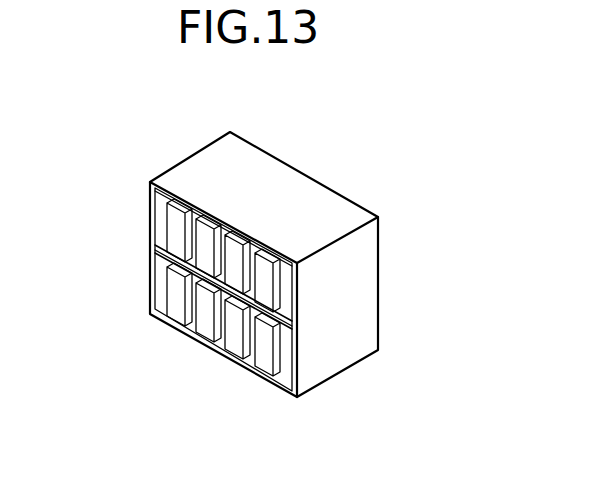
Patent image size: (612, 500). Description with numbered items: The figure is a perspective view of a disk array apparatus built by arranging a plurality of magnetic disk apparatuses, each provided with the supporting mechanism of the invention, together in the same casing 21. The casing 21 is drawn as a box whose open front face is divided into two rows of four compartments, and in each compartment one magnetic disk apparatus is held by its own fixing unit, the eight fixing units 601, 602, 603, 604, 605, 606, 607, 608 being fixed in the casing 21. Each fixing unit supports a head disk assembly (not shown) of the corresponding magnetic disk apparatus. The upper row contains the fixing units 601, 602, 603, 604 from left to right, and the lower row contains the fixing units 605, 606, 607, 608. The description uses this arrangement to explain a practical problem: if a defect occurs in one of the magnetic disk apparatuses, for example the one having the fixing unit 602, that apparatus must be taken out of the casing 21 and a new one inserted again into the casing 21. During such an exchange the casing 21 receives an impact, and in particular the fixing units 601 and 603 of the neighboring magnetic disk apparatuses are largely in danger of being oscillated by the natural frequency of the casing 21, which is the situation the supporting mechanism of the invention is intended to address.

The casing 21 is at (367, 292).
The fixing unit 601 is at (172, 228).
The fixing unit 602 is at (205, 240).
The fixing unit 603 is at (235, 250).
The fixing unit 604 is at (267, 262).
The fixing unit 605 is at (175, 310).
The fixing unit 606 is at (205, 322).
The fixing unit 607 is at (229, 337).
The fixing unit 608 is at (299, 391).